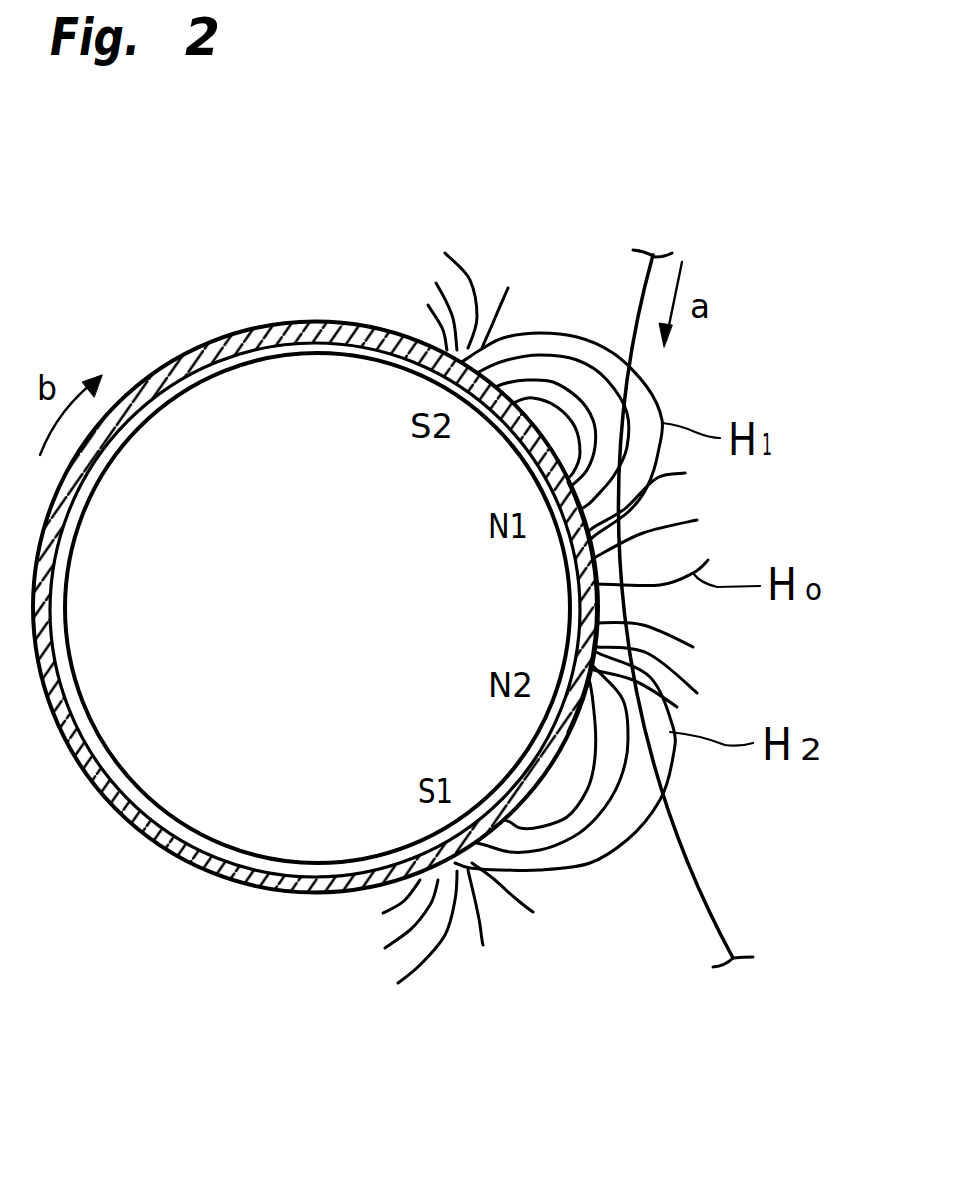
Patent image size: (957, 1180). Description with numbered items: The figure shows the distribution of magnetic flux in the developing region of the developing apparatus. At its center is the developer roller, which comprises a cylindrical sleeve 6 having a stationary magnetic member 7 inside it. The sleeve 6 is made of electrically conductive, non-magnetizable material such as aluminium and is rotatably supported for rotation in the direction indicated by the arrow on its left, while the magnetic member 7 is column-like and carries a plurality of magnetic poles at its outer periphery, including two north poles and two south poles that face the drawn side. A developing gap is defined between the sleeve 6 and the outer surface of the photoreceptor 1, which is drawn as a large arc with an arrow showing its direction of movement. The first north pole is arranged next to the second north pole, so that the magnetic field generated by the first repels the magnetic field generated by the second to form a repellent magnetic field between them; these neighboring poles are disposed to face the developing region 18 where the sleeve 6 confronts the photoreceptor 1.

The photoreceptor 1 is at (705, 898).
The cylindrical sleeve 6 is at (200, 345).
The stationary magnetic member 7 is at (282, 387).
The developing region 18 is at (610, 610).